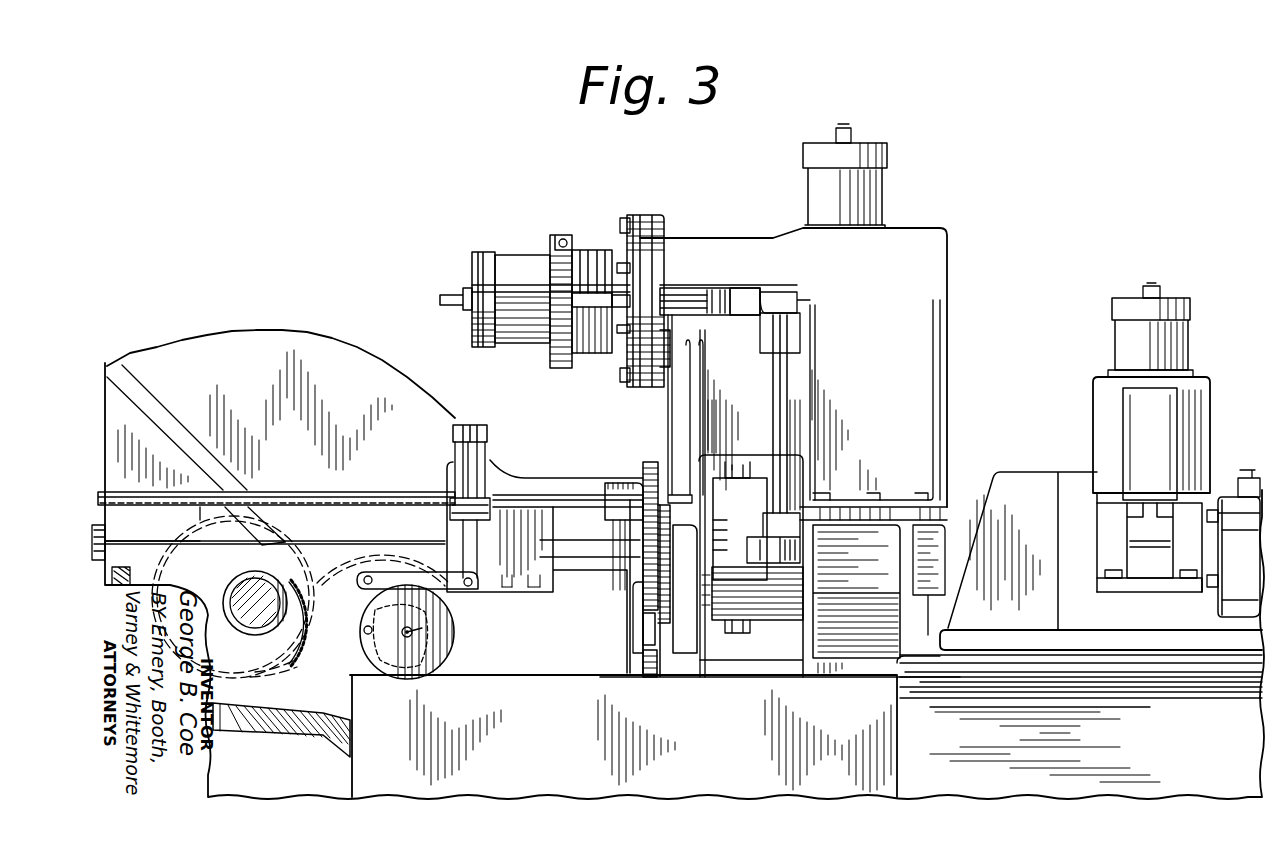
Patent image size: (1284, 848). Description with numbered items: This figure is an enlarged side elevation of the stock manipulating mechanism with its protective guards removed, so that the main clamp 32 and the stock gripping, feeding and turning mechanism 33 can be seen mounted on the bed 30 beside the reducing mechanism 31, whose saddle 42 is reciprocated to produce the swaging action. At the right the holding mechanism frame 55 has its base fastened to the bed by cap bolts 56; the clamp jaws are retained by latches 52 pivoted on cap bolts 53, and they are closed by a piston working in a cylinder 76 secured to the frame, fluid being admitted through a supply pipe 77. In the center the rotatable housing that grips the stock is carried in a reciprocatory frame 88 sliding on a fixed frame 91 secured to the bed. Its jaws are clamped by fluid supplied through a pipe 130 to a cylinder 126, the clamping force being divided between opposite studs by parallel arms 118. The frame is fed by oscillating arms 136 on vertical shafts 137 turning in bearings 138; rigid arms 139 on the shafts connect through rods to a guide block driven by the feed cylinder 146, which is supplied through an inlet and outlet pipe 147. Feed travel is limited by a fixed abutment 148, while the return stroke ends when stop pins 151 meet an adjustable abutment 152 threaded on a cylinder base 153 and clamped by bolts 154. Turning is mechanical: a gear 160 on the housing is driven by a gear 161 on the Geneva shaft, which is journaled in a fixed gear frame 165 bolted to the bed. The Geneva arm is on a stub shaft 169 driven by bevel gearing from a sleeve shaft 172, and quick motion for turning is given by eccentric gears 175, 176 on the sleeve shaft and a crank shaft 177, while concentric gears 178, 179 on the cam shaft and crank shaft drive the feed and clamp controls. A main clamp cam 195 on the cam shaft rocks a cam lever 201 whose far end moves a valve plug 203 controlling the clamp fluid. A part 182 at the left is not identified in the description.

The bed 30 is at (1186, 689).
The reducing mechanism 31 is at (1236, 512).
The main clamp 32 is at (1095, 374).
The stock gripping, feeding and turning mechanism 33 is at (894, 220).
The saddle 42 is at (1252, 480).
The latches 52 is at (1240, 563).
The cap bolts 53 is at (1207, 583).
The holding mechanism frame 55 is at (1117, 526).
The cap bolts 56 is at (1115, 570).
The cylinder 76 is at (1185, 346).
The supply pipe 77 is at (1145, 290).
The reciprocatory frame 88 is at (873, 590).
The fixed frame 91 is at (903, 452).
The parallel arms 118 is at (750, 455).
The cylinder 126 is at (808, 189).
The pipe 130 is at (835, 130).
The oscillating arms 136 is at (800, 525).
The vertical shafts 137 is at (782, 405).
The bearings 138 is at (790, 335).
The rigid arms 139 is at (800, 305).
The feed cylinder 146 is at (526, 262).
The inlet and outlet pipe 147 is at (452, 293).
The fixed abutment 148 is at (740, 298).
The stop pins 151 is at (681, 300).
The adjustable abutment 152 is at (557, 367).
The cylinder base 153 is at (598, 262).
The bolts 154 is at (565, 236).
The gear 160 is at (642, 575).
The gear 161 is at (640, 654).
The fixed gear frame 165 is at (531, 675).
The stub shaft 169 is at (720, 643).
The sleeve shaft 172 is at (407, 632).
The eccentric gear 175 is at (307, 645).
The eccentric gear 176 is at (235, 680).
The crank shaft 177 is at (268, 583).
The concentric gear 178 is at (433, 550).
The concentric gear 179 is at (298, 550).
The dome cover 182 is at (388, 340).
The main clamp cam 195 is at (406, 678).
The cam lever 201 is at (455, 590).
The valve plug 203 is at (470, 548).